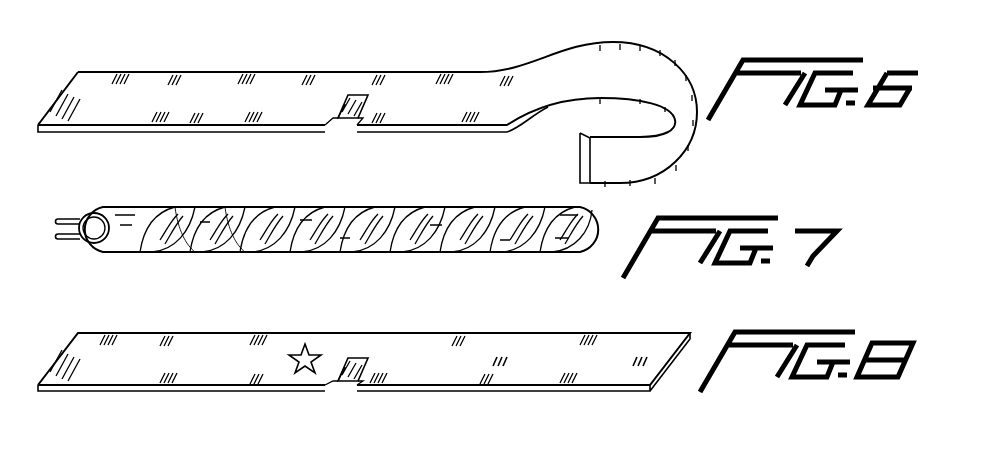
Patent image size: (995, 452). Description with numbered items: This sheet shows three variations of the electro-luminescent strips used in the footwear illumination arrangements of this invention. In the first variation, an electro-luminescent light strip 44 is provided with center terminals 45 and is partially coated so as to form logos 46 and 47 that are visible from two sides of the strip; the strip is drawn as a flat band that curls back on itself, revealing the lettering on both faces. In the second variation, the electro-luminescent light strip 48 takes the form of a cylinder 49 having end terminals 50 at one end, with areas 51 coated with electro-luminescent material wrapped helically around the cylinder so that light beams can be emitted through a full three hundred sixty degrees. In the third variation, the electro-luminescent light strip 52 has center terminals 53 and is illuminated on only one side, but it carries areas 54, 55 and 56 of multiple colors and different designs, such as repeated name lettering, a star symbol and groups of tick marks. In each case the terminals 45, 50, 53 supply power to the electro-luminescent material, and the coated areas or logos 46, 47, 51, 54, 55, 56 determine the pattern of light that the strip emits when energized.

In FIG. 6, the electro-luminescent light strip 44 is at (98, 115).
In FIG. 6, the center terminals 45 is at (338, 118).
In FIG. 6, the logo 46 is at (113, 85).
In FIG. 6, the logo 47 is at (153, 83).
In FIG. 7, the electro-luminescent light strip 48 is at (153, 237).
In FIG. 7, the cylinder 49 is at (398, 213).
In FIG. 7, the end terminals 50 is at (72, 242).
In FIG. 7, the areas coated with electro-luminescent material 51 is at (223, 213).
In FIG. 8, the electro-luminescent light strip 52 is at (647, 376).
In FIG. 8, the center terminals 53 is at (343, 381).
In FIG. 8, the area 54 is at (228, 347).
In FIG. 8, the area 55 is at (318, 345).
In FIG. 8, the area 56 is at (503, 352).